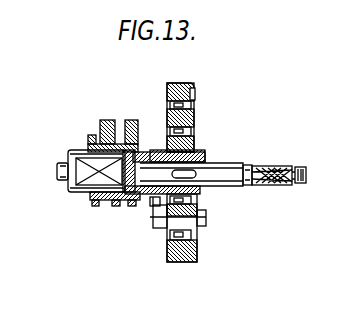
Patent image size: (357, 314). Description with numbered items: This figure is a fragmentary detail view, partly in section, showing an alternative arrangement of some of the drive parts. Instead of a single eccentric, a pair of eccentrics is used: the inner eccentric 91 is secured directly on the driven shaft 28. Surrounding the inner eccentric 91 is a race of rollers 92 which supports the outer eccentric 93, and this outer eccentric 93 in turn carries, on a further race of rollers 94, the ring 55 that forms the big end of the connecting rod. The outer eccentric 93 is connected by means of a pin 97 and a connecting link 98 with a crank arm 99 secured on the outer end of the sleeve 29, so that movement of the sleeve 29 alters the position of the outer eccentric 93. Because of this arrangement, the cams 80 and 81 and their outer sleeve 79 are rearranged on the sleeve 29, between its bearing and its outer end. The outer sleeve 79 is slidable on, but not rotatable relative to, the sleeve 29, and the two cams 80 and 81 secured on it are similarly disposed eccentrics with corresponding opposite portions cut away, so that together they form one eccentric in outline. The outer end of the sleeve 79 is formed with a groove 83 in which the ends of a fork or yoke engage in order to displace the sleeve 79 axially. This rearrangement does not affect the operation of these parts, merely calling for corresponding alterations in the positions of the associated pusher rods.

The driven shaft 28 is at (63, 181).
The sleeve 29 is at (80, 150).
The ring 55 is at (168, 88).
The outer sleeve 79 is at (118, 202).
The cam 80 is at (108, 121).
The cam 81 is at (130, 121).
The groove 83 is at (97, 206).
The inner eccentric 91 is at (197, 145).
The race of rollers 92 is at (195, 124).
The outer eccentric 93 is at (194, 118).
The race of rollers 94 is at (196, 93).
The pin 97 is at (205, 218).
The connecting link 98 is at (160, 229).
The crank arm 99 is at (151, 206).